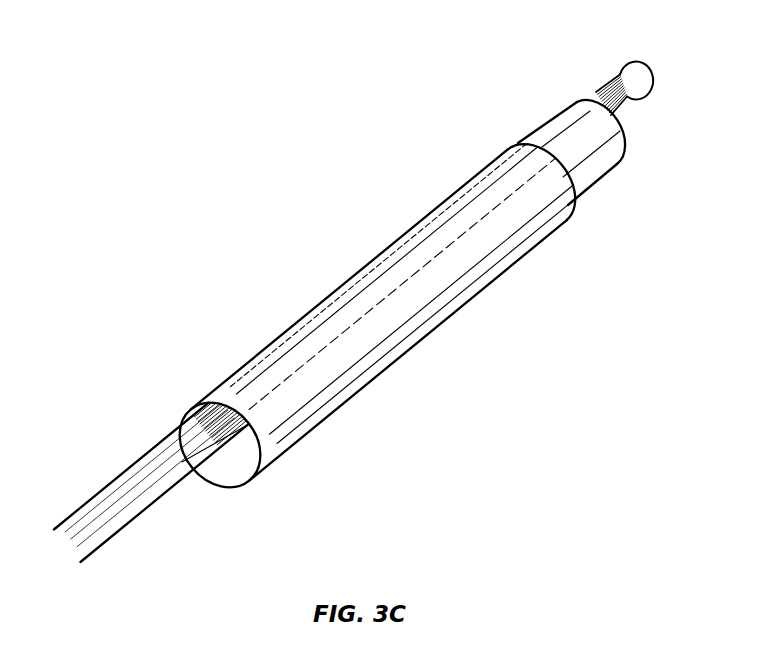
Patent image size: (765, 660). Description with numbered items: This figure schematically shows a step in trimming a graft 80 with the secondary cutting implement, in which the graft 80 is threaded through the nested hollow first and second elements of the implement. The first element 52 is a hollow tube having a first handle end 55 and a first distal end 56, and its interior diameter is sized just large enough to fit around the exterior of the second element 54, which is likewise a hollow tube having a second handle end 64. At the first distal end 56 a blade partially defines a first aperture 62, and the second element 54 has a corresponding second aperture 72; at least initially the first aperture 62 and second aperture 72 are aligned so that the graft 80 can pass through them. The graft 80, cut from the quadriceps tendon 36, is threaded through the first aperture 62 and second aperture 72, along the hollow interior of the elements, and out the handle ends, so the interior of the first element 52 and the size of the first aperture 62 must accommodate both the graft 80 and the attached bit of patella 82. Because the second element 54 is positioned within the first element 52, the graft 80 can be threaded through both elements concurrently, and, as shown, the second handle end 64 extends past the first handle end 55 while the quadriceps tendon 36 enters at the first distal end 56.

The quadriceps tendon 36 is at (128, 490).
The first element 52 is at (357, 271).
The second element 54 is at (543, 133).
The first handle end 55 is at (510, 148).
The first distal end 56 is at (224, 470).
The first aperture 62 is at (184, 419).
The second handle end 64 is at (608, 180).
The second aperture 72 is at (191, 411).
The graft 80 is at (610, 80).
The bit of patella 82 is at (634, 78).